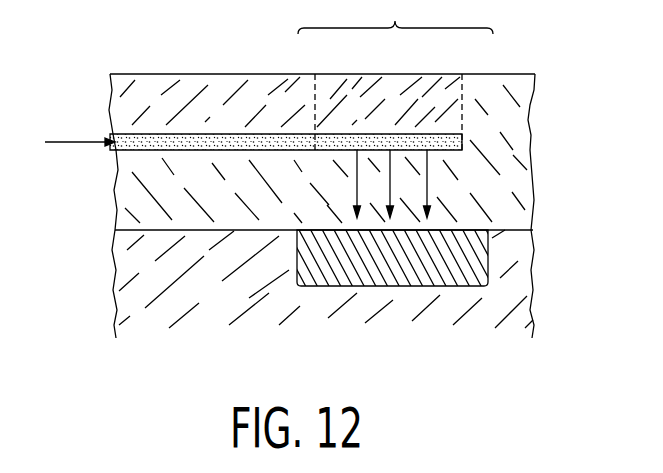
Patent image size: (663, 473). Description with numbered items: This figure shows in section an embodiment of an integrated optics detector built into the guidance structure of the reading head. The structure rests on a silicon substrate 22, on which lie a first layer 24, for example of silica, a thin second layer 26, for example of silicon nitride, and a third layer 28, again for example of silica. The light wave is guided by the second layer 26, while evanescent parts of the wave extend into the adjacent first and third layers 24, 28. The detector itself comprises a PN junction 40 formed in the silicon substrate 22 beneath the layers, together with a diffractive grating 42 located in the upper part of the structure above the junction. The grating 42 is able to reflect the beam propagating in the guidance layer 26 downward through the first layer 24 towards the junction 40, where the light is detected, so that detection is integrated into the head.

The silicon substrate 22 is at (151, 282).
The first layer 24 is at (153, 197).
The second layer 26 is at (150, 146).
The third layer 28 is at (157, 83).
The PN junction 40 is at (465, 250).
The diffractive grating 42 is at (387, 103).